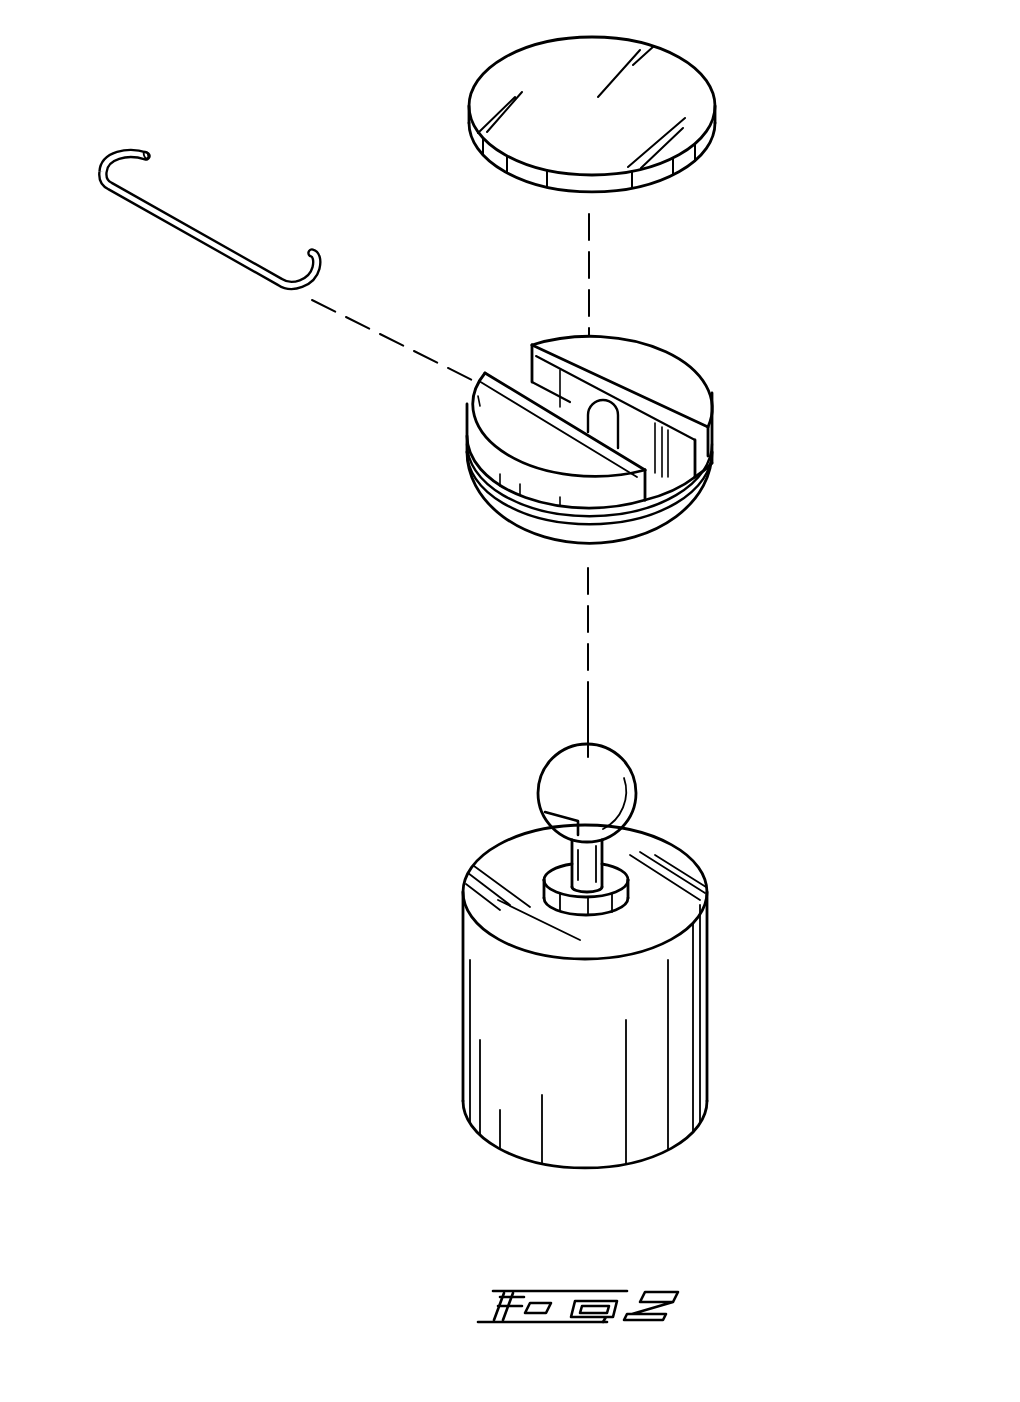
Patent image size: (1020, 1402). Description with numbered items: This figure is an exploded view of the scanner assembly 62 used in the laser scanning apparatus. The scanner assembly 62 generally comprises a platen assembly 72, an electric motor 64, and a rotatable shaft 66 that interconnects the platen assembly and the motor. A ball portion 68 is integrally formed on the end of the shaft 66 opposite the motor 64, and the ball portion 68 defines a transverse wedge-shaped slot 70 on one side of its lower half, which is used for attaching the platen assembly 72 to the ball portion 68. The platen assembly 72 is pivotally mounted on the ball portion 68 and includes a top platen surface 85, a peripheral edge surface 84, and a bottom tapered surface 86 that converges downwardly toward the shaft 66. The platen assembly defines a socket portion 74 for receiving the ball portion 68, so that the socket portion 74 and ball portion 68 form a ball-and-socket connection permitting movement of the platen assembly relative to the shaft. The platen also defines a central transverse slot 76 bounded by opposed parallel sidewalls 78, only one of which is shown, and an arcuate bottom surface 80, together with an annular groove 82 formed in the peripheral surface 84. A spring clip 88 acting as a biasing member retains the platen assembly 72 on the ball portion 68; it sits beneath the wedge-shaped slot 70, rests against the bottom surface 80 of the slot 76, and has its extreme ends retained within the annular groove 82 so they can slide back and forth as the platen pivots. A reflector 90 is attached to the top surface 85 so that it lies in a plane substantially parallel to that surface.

The scanner assembly 62 is at (594, 917).
The electric motor 64 is at (524, 1032).
The rotatable shaft 66 is at (587, 860).
The ball portion 68 is at (567, 775).
The wedge-shaped slot 70 is at (558, 831).
The platen assembly 72 is at (586, 443).
The socket portion 74 is at (603, 418).
The central transverse slot 76 is at (513, 379).
The sidewall 78 is at (680, 455).
The arcuate bottom surface 80 is at (662, 487).
The annular groove 82 is at (563, 509).
The peripheral edge surface 84 is at (493, 467).
The top platen surface 85 is at (517, 453).
The bottom tapered surface 86 is at (597, 530).
The spring clip 88 is at (117, 152).
The reflector 90 is at (563, 68).